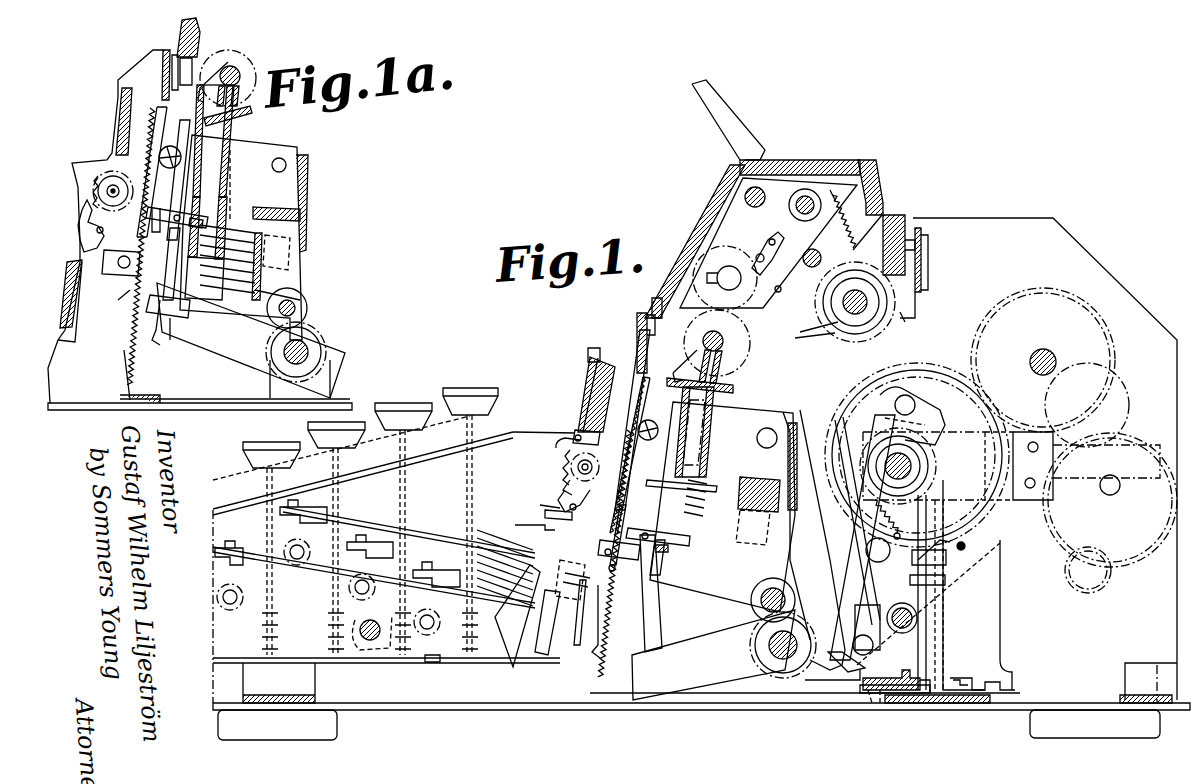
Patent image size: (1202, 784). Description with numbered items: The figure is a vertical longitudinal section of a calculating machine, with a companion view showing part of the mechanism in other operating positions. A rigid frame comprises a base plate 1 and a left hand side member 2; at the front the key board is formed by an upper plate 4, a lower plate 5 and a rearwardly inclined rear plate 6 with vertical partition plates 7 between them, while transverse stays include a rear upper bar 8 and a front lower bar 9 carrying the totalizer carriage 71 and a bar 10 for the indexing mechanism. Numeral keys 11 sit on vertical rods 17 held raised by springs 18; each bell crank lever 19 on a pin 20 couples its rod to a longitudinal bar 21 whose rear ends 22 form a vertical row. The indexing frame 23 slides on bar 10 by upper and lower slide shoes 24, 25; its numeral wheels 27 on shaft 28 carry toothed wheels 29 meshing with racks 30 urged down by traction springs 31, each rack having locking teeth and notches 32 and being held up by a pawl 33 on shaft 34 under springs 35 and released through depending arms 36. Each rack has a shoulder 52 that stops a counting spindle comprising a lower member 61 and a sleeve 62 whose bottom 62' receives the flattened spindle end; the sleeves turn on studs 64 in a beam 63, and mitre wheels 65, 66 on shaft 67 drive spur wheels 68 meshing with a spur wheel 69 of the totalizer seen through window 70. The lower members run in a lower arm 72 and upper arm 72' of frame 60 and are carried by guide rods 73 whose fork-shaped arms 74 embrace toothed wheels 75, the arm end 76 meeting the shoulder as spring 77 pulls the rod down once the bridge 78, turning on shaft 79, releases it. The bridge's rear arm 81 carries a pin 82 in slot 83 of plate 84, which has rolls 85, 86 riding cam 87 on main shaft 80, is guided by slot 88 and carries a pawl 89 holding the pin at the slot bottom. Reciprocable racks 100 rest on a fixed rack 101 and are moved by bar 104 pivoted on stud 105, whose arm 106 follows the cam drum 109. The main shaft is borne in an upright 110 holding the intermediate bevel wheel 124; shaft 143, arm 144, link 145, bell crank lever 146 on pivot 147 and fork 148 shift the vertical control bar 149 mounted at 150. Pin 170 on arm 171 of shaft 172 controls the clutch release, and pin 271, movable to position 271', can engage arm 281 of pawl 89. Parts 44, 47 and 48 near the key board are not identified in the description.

In FIG. 1, the base plate 1 is at (478, 710).
In FIG. 1, the left hand side member 2 is at (508, 432).
In FIG. 1, the upper plate 4 is at (388, 462).
In FIG. 1, the lower plate 5 is at (432, 663).
In FIG. 1, the rear plate 6 is at (553, 650).
In FIG. 1, the vertical plates 7 is at (455, 455).
In FIG. 1, the rear upper bar 8 is at (905, 222).
In FIG. 1, the front lower bar 9 is at (636, 316).
In FIG. 1, the bar 10 is at (594, 380).
In FIG. 1, the numeral keys 11 is at (265, 442).
In FIG. 1, the vertical rods 17 is at (275, 478).
In FIG. 1, the springs 18 is at (326, 640).
In FIG. 1, the bell crank lever 19 is at (305, 516).
In FIG. 1, the pin 20 is at (355, 595).
In FIG. 1, the bars 21 is at (430, 550).
In FIG. 1, the rear ends of bars 22 is at (585, 600).
In FIG. 1, the frame 23 is at (591, 364).
In FIG. 1, the upper slide shoe 24 is at (592, 346).
In FIG. 1, the lower slide shoe 25 is at (580, 430).
In FIG. 1, the numeral wheels 27 is at (560, 446).
In FIG. 1, the shaft 28 is at (565, 484).
In FIG. 1A, the toothed wheel 29 is at (93, 193).
In FIG. 1, the toothed wheel 29 is at (575, 462).
In FIG. 1A, the rack 30 is at (154, 112).
In FIG. 1, the rack 30 is at (622, 450).
In FIG. 1A, the traction springs 31 is at (162, 135).
In FIG. 1, the traction springs 31 is at (625, 480).
In FIG. 1A, the rectangular teeth and notches 32 is at (85, 300).
In FIG. 1, the rectangular teeth and notches 32 is at (570, 600).
In FIG. 1A, the pawl 33 is at (84, 226).
In FIG. 1, the pawl 33 is at (560, 500).
In FIG. 1, the shaft 34 is at (547, 511).
In FIG. 1, the springs 35 is at (574, 436).
In FIG. 1, the depending arms 36 is at (602, 570).
In FIG. 1, the frame bar 44 is at (520, 640).
In FIG. 1, the spring seat 47 is at (515, 525).
In FIG. 1, the spring 48 is at (540, 510).
In FIG. 1A, the shoulder 52 is at (123, 254).
In FIG. 1, the shoulder 52 is at (619, 545).
In FIG. 1A, the frame 60 is at (244, 231).
In FIG. 1, the frame 60 is at (748, 420).
In FIG. 1A, the lower rod-shaped member 61 is at (188, 320).
In FIG. 1, the lower rod-shaped member 61 is at (664, 648).
In FIG. 1A, the upper sleeve-shaped member 62 is at (221, 192).
In FIG. 1, the upper sleeve-shaped member 62 is at (707, 432).
In FIG. 1, the bottom of sleeve 62' is at (713, 432).
In FIG. 1, the beam 63 is at (733, 390).
In FIG. 1, the upstanding studs 64 is at (728, 340).
In FIG. 1, the mitre wheel 65 is at (732, 350).
In FIG. 1, the mitre wheel 66 is at (714, 330).
In FIG. 1, the shaft 67 is at (662, 283).
In FIG. 1, the spur wheel 68 is at (723, 350).
In FIG. 1, the spur wheel 69 is at (762, 268).
In FIG. 1, the window 70 is at (690, 245).
In FIG. 1, the totalizer carriage 71 is at (705, 212).
In FIG. 1A, the lower arm 72 is at (124, 308).
In FIG. 1, the lower arm 72 is at (627, 521).
In FIG. 1A, the upper arm 72' is at (174, 180).
In FIG. 1, the upper arm 72' is at (643, 420).
In FIG. 1A, the guide rod 73 is at (160, 335).
In FIG. 1, the guide rod 73 is at (602, 658).
In FIG. 1A, the fork-shaped lower arm 74 is at (205, 212).
In FIG. 1, the fork-shaped lower arm 74 is at (660, 546).
In FIG. 1A, the toothed wheel 75 is at (192, 222).
In FIG. 1, the toothed wheel 75 is at (685, 548).
In FIG. 1A, the end of arm 76 is at (158, 210).
In FIG. 1, the end of arm 76 is at (620, 535).
In FIG. 1A, the spring 77 is at (124, 356).
In FIG. 1, the spring 77 is at (597, 672).
In FIG. 1A, the bridge 78 is at (238, 352).
In FIG. 1, the bridge 78 is at (666, 684).
In FIG. 1A, the shaft 79 is at (298, 352).
In FIG. 1, the shaft 79 is at (782, 660).
In FIG. 1, the main shaft 80 is at (868, 455).
In FIG. 1, the rearwardly projecting arm 81 is at (836, 672).
In FIG. 1, the pin 82 is at (872, 655).
In FIG. 1, the elongated slot 83 is at (945, 638).
In FIG. 1, the plate 84 is at (928, 603).
In FIG. 1, the roll 85 is at (900, 390).
In FIG. 1, the roll 86 is at (862, 512).
In FIG. 1, the cam 87 is at (835, 397).
In FIG. 1, the slot 88 is at (918, 408).
In FIG. 1, the pawl 89 is at (870, 600).
In FIG. 1, the transversely reciprocable racks 100 is at (703, 478).
In FIG. 1, the rack 101 is at (742, 548).
In FIG. 1, the bar 104 is at (742, 480).
In FIG. 1, the stud 105 is at (845, 470).
In FIG. 1, the upwardly projecting arm 106 is at (834, 518).
In FIG. 1, the drum 109 is at (838, 392).
In FIG. 1, the upright 110 is at (945, 655).
In FIG. 1, the intermediate bevel wheel 124 is at (935, 505).
In FIG. 1, the shaft 143 is at (365, 642).
In FIG. 1, the arm 144 is at (385, 652).
In FIG. 1, the link 145 is at (582, 622).
In FIG. 1, the bell crank lever 146 is at (912, 694).
In FIG. 1, the pivot 147 is at (872, 694).
In FIG. 1, the fork 148 is at (932, 694).
In FIG. 1, the vertical control bar 149 is at (918, 618).
In FIG. 1, the control bar mounting 150 is at (945, 586).
In FIG. 1, the pin 170 is at (810, 522).
In FIG. 1, the arm 171 is at (790, 566).
In FIG. 1, the shaft 172 is at (790, 598).
In FIG. 1, the pin 271 is at (992, 541).
In FIG. 1, the pin forward position 271' is at (950, 539).
In FIG. 1, the arm 281 is at (947, 562).